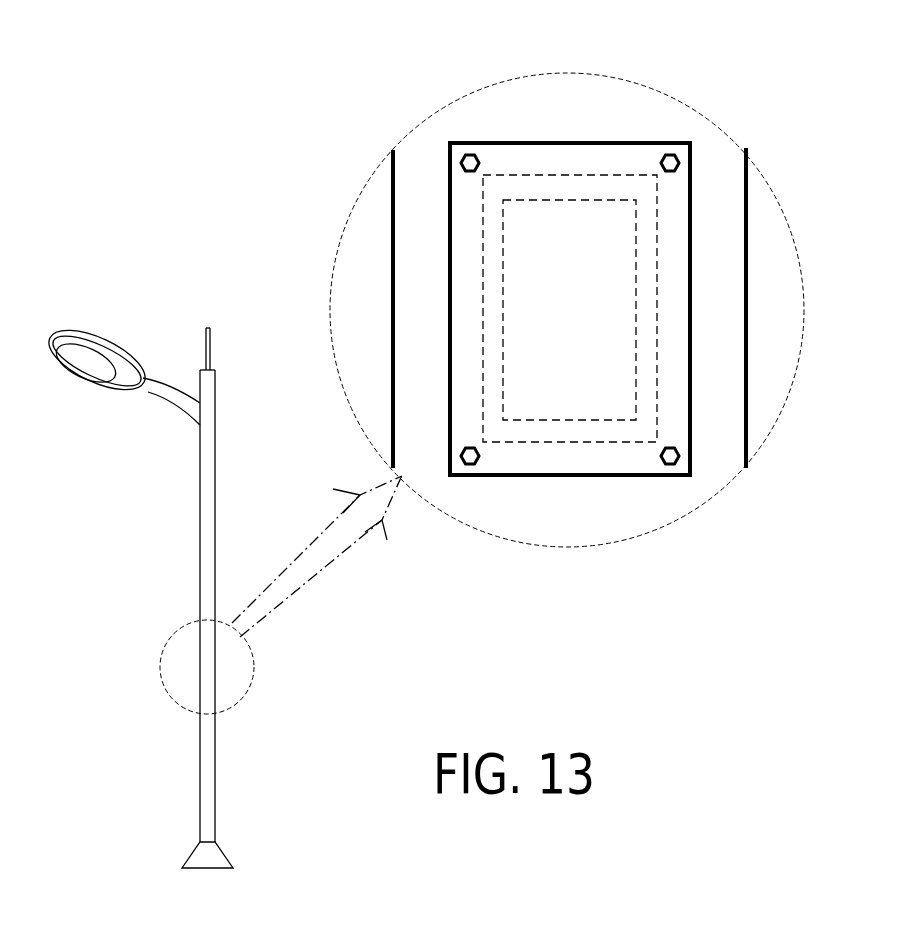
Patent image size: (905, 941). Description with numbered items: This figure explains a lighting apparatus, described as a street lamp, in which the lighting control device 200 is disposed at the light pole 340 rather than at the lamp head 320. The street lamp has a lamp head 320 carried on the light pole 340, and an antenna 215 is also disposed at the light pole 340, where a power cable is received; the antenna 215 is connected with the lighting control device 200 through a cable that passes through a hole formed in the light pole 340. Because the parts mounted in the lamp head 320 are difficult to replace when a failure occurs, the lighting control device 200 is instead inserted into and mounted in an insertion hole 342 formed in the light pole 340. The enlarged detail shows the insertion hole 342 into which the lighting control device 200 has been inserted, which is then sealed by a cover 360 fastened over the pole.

The light pole 340 is at (200, 463).
The lamp head 320 is at (75, 380).
The antenna 215 is at (207, 337).
The cover 360 is at (521, 143).
The insertion hole 342 is at (485, 312).
The lighting control device 200 is at (568, 200).